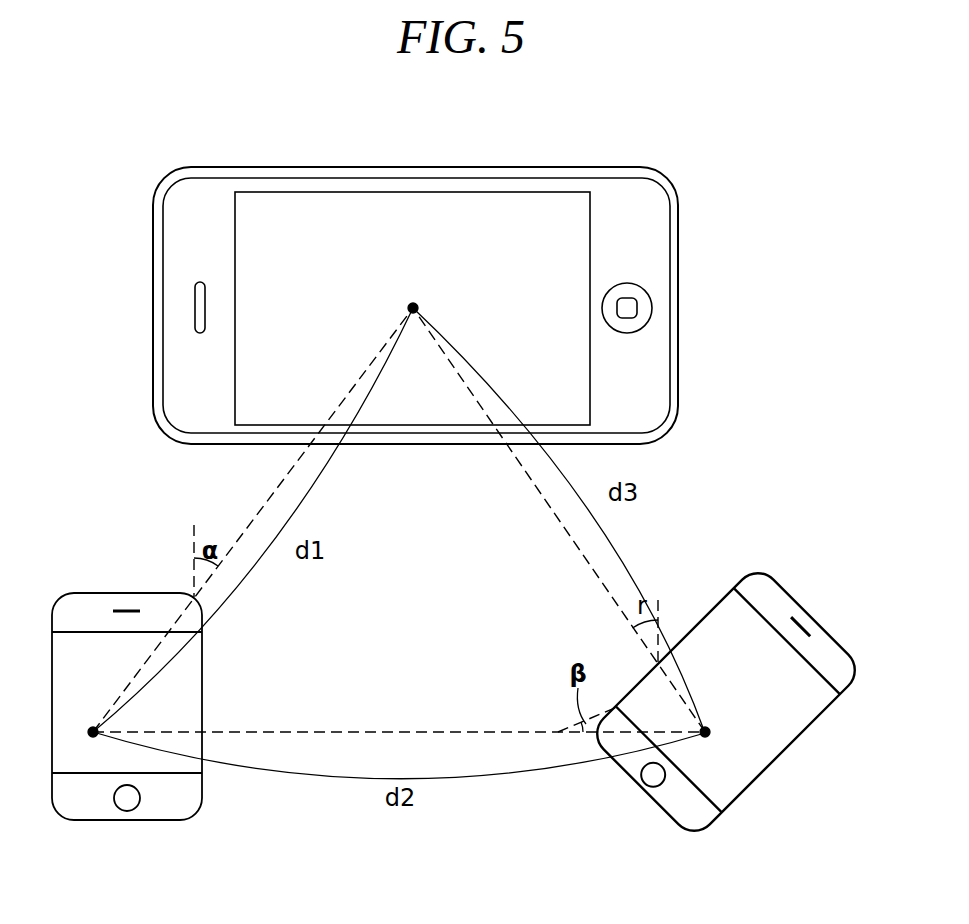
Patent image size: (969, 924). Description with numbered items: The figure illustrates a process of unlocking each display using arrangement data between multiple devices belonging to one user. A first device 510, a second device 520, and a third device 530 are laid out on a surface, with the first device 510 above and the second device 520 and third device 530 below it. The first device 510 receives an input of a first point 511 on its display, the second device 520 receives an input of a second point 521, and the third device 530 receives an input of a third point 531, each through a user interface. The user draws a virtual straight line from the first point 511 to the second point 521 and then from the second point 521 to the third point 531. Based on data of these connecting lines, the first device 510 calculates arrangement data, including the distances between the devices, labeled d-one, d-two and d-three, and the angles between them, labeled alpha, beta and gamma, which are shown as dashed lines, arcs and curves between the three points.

The first device 510 is at (517, 175).
The first point 511 is at (413, 300).
The second device 520 is at (103, 605).
The second point 521 is at (93, 725).
The third device 530 is at (802, 605).
The third point 531 is at (713, 733).